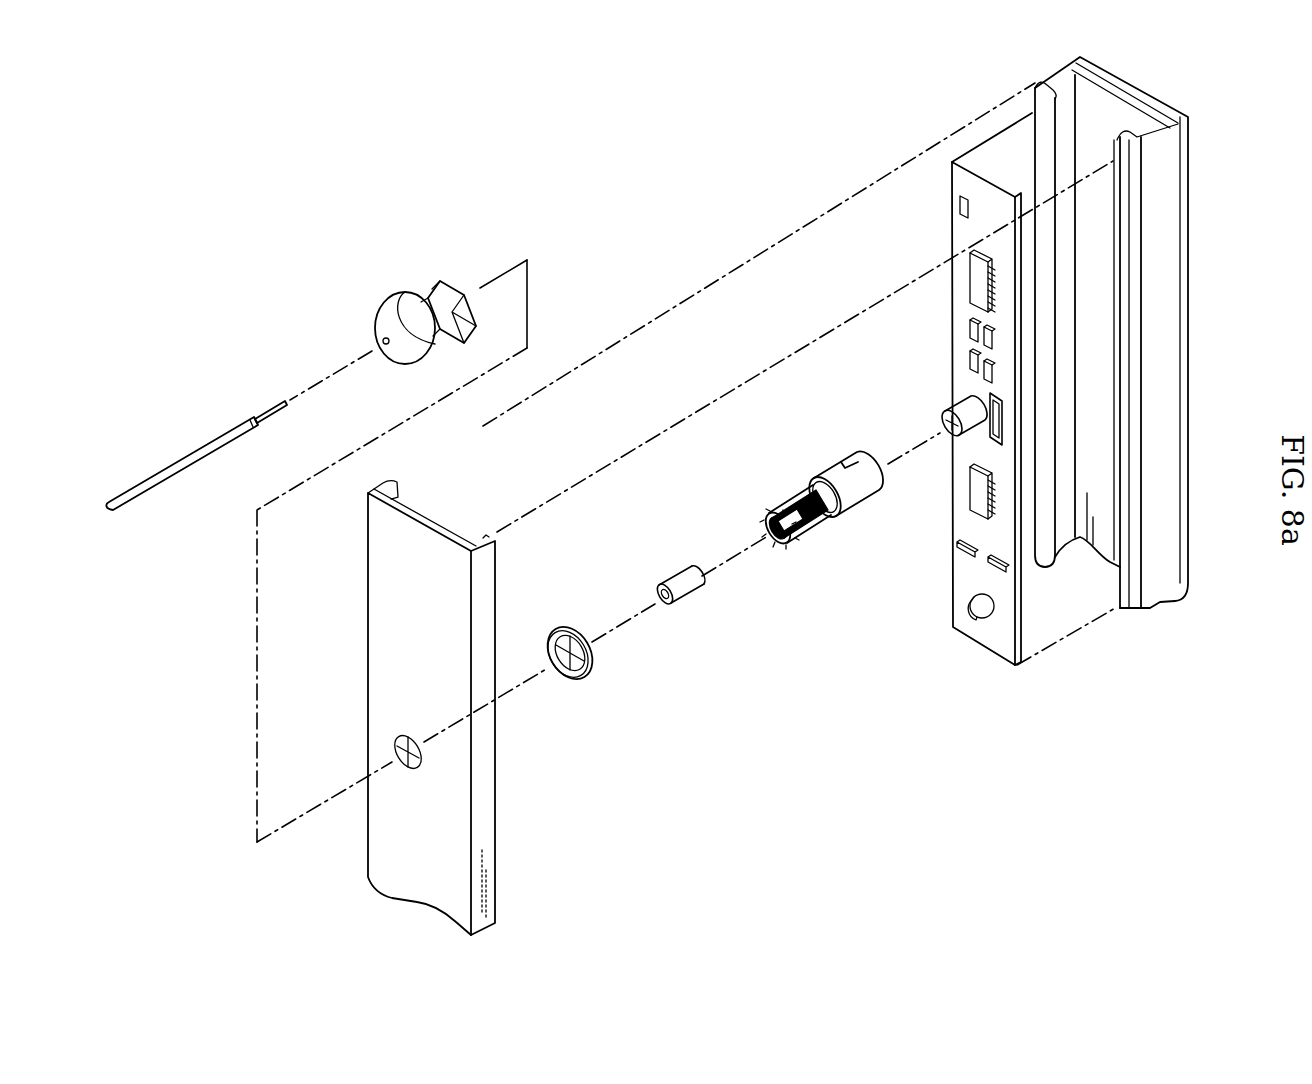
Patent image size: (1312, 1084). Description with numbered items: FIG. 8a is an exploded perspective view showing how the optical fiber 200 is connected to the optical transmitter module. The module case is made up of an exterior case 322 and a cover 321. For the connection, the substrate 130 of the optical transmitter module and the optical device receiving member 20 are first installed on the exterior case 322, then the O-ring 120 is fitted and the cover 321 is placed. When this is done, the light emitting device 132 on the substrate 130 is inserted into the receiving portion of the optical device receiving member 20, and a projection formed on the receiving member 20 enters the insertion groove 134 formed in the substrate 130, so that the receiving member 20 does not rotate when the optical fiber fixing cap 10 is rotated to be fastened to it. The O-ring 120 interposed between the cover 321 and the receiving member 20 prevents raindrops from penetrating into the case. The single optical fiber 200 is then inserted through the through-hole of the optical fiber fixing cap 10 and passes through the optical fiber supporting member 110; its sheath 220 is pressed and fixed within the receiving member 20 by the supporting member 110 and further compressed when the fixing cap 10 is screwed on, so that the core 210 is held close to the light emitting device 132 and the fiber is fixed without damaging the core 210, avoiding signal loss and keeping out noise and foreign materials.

The optical fiber fixing cap 10 is at (394, 298).
The optical device receiving member 20 is at (838, 520).
The optical fiber supporting member 110 is at (683, 603).
The O-ring 120 is at (581, 681).
The substrate 130 is at (951, 199).
The light emitting device 132 is at (940, 425).
The insertion groove 134 is at (988, 440).
The optical fiber 200 is at (196, 445).
The core 210 is at (278, 406).
The sheath 220 is at (189, 451).
The cover 321 is at (368, 825).
The exterior case 322 is at (1155, 605).